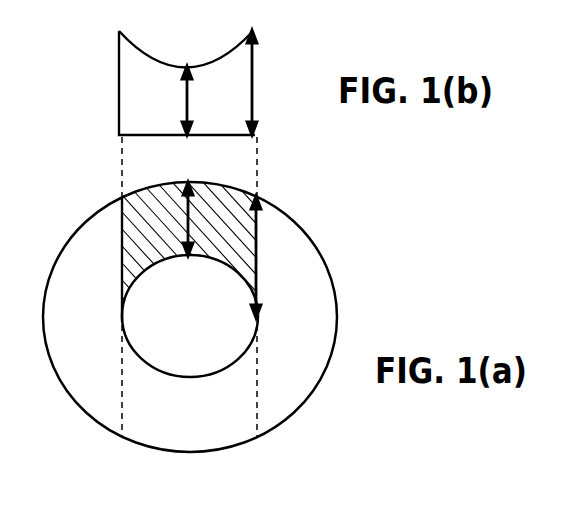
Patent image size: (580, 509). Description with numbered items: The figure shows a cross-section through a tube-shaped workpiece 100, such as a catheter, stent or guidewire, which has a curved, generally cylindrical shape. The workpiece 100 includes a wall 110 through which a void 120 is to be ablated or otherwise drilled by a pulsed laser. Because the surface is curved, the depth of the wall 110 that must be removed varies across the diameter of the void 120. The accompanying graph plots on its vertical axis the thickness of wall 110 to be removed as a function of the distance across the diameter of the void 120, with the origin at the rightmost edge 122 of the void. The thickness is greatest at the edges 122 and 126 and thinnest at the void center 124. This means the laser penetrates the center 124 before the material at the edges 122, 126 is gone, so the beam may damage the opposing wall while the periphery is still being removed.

The tube-shaped workpiece 100 is at (202, 297).
The wall 110 is at (341, 234).
The void 120 is at (222, 207).
The edge of the void 122 is at (121, 240).
The void center 124 is at (186, 211).
The edge of the void 126 is at (258, 268).